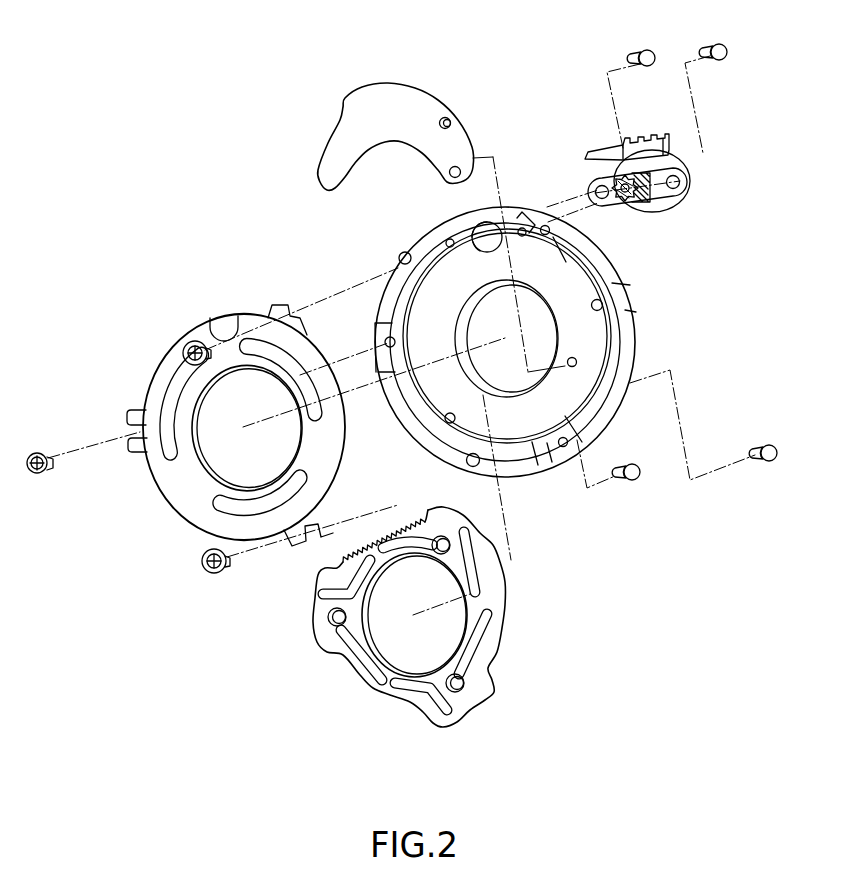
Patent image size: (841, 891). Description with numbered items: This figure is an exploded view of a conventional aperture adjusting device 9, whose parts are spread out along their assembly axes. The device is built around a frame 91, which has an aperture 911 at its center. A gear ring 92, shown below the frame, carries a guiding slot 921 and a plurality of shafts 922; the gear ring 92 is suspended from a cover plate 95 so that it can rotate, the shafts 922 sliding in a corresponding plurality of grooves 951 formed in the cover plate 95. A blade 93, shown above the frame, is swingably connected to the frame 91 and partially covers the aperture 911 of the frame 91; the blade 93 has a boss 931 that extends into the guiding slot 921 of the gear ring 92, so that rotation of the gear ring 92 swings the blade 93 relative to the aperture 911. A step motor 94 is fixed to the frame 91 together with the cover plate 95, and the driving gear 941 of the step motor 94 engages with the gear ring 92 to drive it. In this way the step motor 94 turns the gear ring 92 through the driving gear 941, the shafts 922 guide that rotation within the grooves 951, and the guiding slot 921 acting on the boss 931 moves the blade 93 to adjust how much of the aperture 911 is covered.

The aperture adjusting device 9 is at (160, 34).
The frame 91 is at (538, 342).
The aperture 911 is at (535, 312).
The gear ring 92 is at (458, 605).
The guiding slot 921 is at (468, 558).
The shafts 922 is at (447, 545).
The blade 93 is at (407, 130).
The boss 931 is at (447, 118).
The step motor 94 is at (670, 184).
The driving gear 941 is at (637, 198).
The cover plate 95 is at (224, 440).
The grooves 951 is at (258, 345).